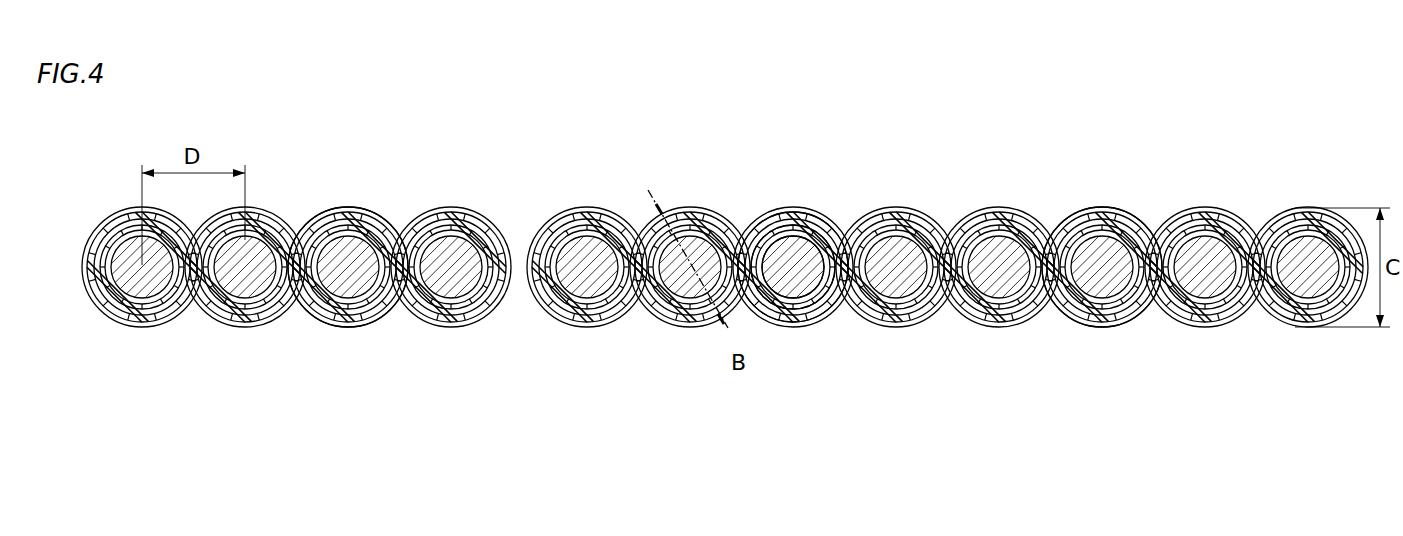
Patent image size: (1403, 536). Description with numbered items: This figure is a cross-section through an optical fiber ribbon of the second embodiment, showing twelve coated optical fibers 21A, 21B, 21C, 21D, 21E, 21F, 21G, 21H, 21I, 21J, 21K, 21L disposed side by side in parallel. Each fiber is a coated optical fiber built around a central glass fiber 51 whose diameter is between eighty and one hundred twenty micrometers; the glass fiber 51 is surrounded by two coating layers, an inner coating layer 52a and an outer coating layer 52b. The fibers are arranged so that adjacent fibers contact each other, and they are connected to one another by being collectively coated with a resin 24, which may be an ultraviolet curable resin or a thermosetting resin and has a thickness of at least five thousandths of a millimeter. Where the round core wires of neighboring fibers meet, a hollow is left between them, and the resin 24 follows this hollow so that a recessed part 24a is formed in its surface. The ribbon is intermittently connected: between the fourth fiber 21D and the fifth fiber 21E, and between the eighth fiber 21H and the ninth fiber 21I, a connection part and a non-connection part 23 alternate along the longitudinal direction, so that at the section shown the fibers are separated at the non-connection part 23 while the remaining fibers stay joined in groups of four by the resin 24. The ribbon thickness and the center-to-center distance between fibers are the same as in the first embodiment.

The optical fiber 21A is at (137, 328).
The optical fiber 21B is at (240, 328).
The optical fiber 21C is at (343, 328).
The optical fiber 21D is at (446, 328).
The optical fiber 21E is at (582, 328).
The optical fiber 21F is at (685, 328).
The optical fiber 21G is at (788, 328).
The optical fiber 21H is at (891, 328).
The optical fiber 21I is at (994, 328).
The optical fiber 21J is at (1097, 328).
The optical fiber 21K is at (1200, 328).
The optical fiber 21L is at (1303, 328).
The non-connection part 23 is at (518, 212).
The resin 24 is at (349, 207).
The recessed part 24a is at (1256, 232).
The glass fiber 51 is at (783, 262).
The inner coating layer 52a is at (787, 221).
The outer coating layer 52b is at (815, 210).